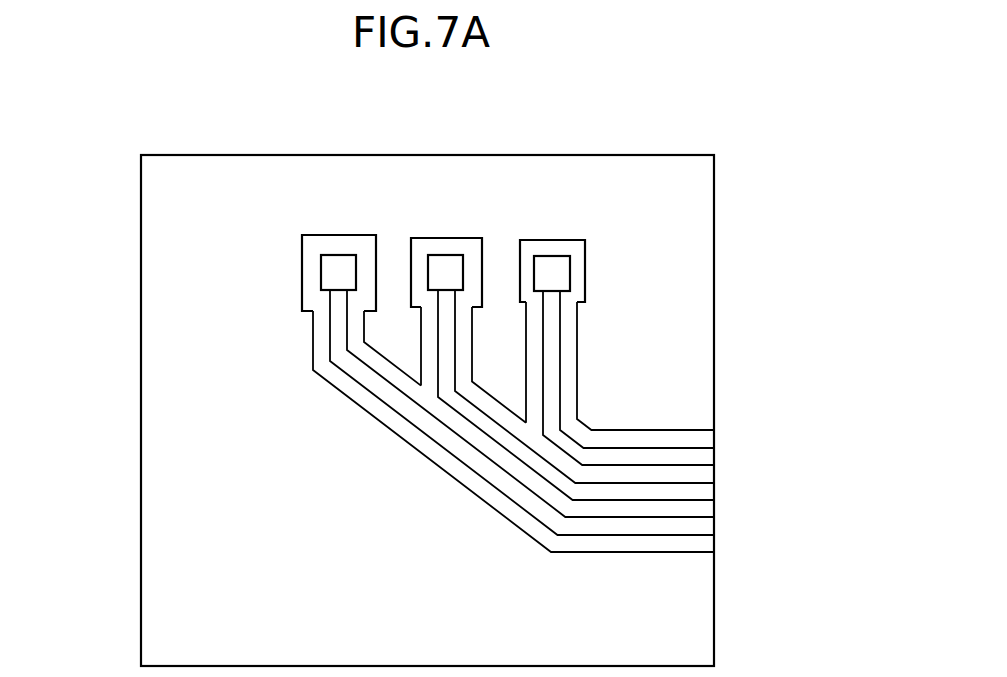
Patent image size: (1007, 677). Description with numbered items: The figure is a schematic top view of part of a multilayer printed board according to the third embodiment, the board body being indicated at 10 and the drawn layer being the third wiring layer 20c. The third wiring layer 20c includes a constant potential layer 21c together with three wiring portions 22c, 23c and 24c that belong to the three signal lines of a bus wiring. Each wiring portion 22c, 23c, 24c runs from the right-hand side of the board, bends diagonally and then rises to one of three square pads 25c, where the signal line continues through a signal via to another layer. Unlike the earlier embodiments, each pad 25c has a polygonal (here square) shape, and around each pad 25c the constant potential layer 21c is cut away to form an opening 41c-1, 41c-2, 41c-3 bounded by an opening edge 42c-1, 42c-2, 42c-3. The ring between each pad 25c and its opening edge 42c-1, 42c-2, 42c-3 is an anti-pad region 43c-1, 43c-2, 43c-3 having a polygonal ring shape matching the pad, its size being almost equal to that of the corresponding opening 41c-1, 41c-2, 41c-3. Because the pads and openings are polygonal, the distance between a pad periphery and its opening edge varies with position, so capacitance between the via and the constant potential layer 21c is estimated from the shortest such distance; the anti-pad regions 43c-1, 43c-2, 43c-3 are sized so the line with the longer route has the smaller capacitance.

The substrate 10 is at (141, 635).
The third wiring layer 20c is at (780, 443).
The constant potential layer 21c is at (703, 583).
The wiring portion 22c is at (703, 456).
The wiring portion 23c is at (703, 491).
The wiring portion 24c is at (703, 526).
The pad 25c is at (332, 278).
The opening 41c-1 is at (575, 267).
The opening 41c-2 is at (420, 246).
The opening 41c-3 is at (308, 265).
The opening edge 42c-1 is at (569, 240).
The opening edge 42c-2 is at (467, 237).
The opening edge 42c-3 is at (312, 238).
The anti-pad region 43c-1 is at (660, 271).
The anti-pad region 43c-2 is at (441, 196).
The anti-pad region 43c-3 is at (210, 273).